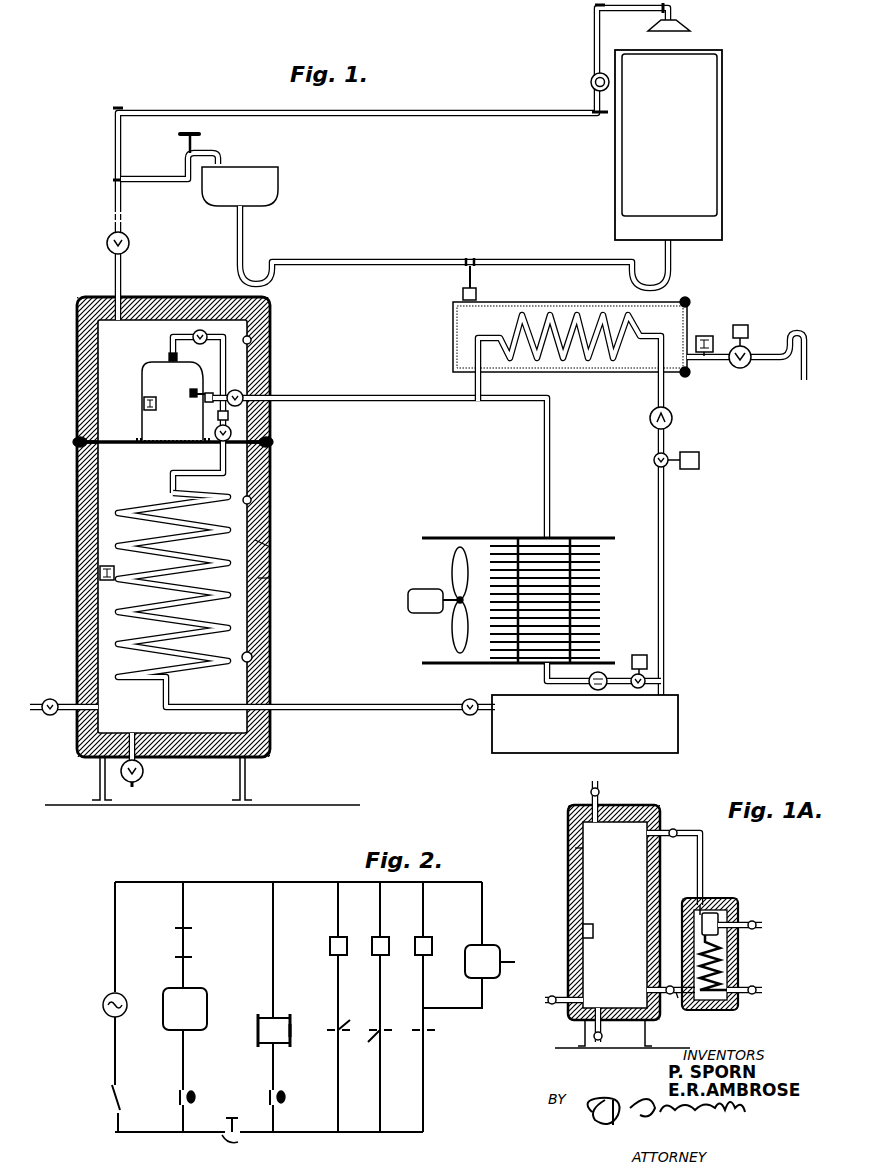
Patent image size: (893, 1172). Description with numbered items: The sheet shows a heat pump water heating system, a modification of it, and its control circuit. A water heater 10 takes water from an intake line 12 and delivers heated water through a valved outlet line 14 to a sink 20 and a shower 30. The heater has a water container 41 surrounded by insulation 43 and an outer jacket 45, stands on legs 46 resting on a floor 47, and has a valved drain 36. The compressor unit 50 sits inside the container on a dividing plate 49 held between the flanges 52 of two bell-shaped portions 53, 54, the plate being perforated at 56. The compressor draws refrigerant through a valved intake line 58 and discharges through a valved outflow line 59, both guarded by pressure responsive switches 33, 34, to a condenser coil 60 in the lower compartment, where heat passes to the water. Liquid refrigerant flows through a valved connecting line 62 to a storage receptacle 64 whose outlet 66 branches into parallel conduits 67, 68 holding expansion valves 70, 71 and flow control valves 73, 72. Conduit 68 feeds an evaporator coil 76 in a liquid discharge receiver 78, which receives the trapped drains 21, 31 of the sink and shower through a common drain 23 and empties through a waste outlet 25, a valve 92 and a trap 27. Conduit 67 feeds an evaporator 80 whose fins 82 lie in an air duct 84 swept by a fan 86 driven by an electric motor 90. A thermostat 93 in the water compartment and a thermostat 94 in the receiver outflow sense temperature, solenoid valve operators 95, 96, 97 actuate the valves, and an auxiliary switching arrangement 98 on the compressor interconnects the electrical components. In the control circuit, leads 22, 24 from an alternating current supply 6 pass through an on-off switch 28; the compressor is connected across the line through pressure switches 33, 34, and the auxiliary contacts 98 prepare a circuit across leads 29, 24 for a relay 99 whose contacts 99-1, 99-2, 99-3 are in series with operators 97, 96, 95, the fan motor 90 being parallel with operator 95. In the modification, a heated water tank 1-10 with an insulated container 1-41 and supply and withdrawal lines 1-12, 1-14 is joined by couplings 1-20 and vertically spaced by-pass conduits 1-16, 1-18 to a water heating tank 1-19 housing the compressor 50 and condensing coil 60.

In FIG. 1, the water heater 10 is at (274, 386).
In FIG. 1, the intake line 12 is at (62, 700).
In FIG. 1, the valved outlet line 14 is at (123, 272).
In FIG. 1, the sink 20 is at (246, 170).
In FIG. 1, the trapped drain 21 is at (246, 225).
In FIG. 1, the common drain 23 is at (478, 290).
In FIG. 1, the waste outlet 25 is at (716, 365).
In FIG. 1, the trap 27 is at (795, 333).
In FIG. 1, the shower 30 is at (702, 45).
In FIG. 1, the trapped drain 31 is at (673, 255).
In FIG. 1, the pressure responsive switch 33 is at (168, 356).
In FIG. 2, the pressure responsive switch 33 is at (176, 956).
In FIG. 1, the pressure responsive switch 34 is at (190, 390).
In FIG. 2, the pressure responsive switch 34 is at (176, 927).
In FIG. 1, the valved drain 36 is at (138, 781).
In FIG. 1, the water container 41 is at (268, 500).
In FIG. 1, the insulation 43 is at (272, 547).
In FIG. 1, the outer jacket 45 is at (271, 579).
In FIG. 1, the legs 46 is at (246, 775).
In FIG. 1, the floor 47 is at (292, 805).
In FIG. 1, the dividing plate 49 is at (152, 447).
In FIG. 1, the compressor unit 50 is at (142, 368).
In FIG. 2, the compressor unit 50 is at (198, 992).
In FIG. 1A, the compressor unit 50 is at (714, 908).
In FIG. 1, the flanges 52 is at (272, 444).
In FIG. 1, the bell-shaped portion 53 is at (268, 339).
In FIG. 1, the bell-shaped portion 54 is at (252, 657).
In FIG. 1, the perforations 56 is at (228, 446).
In FIG. 1, the valved intake line 58 is at (231, 392).
In FIG. 1A, the valved intake line 58 is at (760, 928).
In FIG. 1, the valved outflow line 59 is at (170, 342).
In FIG. 1A, the valved outflow line 59 is at (697, 912).
In FIG. 1, the condenser coil 60 is at (172, 490).
In FIG. 1A, the condenser coil 60 is at (722, 962).
In FIG. 1, the valved connecting line 62 is at (302, 712).
In FIG. 1A, the valved connecting line 62 is at (760, 989).
In FIG. 1, the storage receptacle 64 is at (492, 739).
In FIG. 1, the outlet 66 is at (668, 692).
In FIG. 1, the conduit 67 is at (600, 672).
In FIG. 1, the conduit 68 is at (664, 530).
In FIG. 1, the expansion valve 70 is at (588, 684).
In FIG. 1, the expansion valve 71 is at (673, 418).
In FIG. 1, the solenoid valve 72 is at (657, 466).
In FIG. 1, the flow control valve 73 is at (648, 678).
In FIG. 1, the evaporator coil 76 is at (582, 325).
In FIG. 1, the liquid discharge receiver vessel 78 is at (617, 376).
In FIG. 1, the refrigerant evaporator structure 80 is at (562, 540).
In FIG. 1, the fins 82 is at (598, 572).
In FIG. 1, the air duct 84 is at (467, 537).
In FIG. 1, the fan 86 is at (452, 570).
In FIG. 1, the electric motor 90 is at (426, 613).
In FIG. 2, the electric motor 90 is at (483, 945).
In FIG. 1A, the electric motor 90 is at (532, 964).
In FIG. 1, the valve 92 is at (744, 368).
In FIG. 1, the thermostat 93 is at (100, 571).
In FIG. 2, the thermostat 93 is at (180, 1097).
In FIG. 1A, the thermostat 93 is at (583, 930).
In FIG. 1, the thermostat 94 is at (704, 334).
In FIG. 2, the thermostat 94 is at (270, 1097).
In FIG. 1, the valve operator 95 is at (640, 655).
In FIG. 2, the valve operator 95 is at (415, 942).
In FIG. 1, the valve operator 96 is at (700, 460).
In FIG. 2, the valve operator 96 is at (372, 942).
In FIG. 1, the valve operator 97 is at (740, 325).
In FIG. 2, the valve operator 97 is at (330, 942).
In FIG. 1, the auxiliary switching arrangement 98 is at (144, 408).
In FIG. 2, the auxiliary switching arrangement 98 is at (243, 1139).
In FIG. 2, the power source 6 is at (106, 996).
In FIG. 2, the lead 22 is at (150, 1135).
In FIG. 2, the lead 24 is at (158, 880).
In FIG. 2, the on-off switch 28 is at (110, 1096).
In FIG. 2, the lead 29 is at (312, 1135).
In FIG. 2, the relay 99 is at (264, 1022).
In FIG. 2, the relay contacts 99-1 is at (345, 1026).
In FIG. 2, the relay contacts 99-2 is at (378, 1034).
In FIG. 2, the relay contacts 99-3 is at (436, 1030).
In FIG. 1A, the heated water tank 1-10 is at (652, 806).
In FIG. 1A, the water supply line 1-12 is at (550, 1004).
In FIG. 1A, the water withdrawal line 1-14 is at (600, 789).
In FIG. 1A, the by-pass conduit 1-16 is at (676, 1000).
In FIG. 1A, the by-pass conduit 1-18 is at (704, 850).
In FIG. 1A, the water heating tank 1-19 is at (738, 905).
In FIG. 1A, the couplings 1-20 is at (668, 987).
In FIG. 1A, the insulated container 1-41 is at (575, 848).